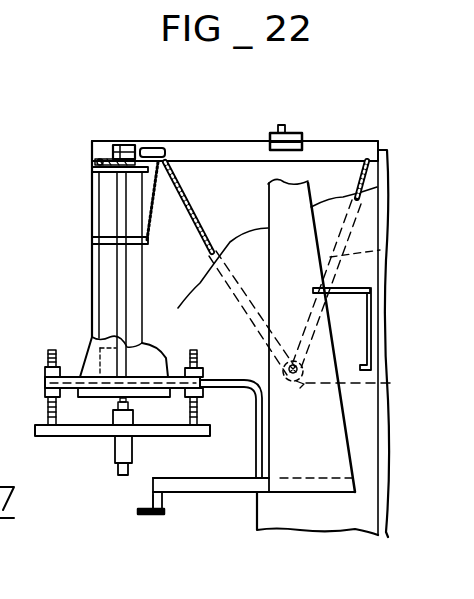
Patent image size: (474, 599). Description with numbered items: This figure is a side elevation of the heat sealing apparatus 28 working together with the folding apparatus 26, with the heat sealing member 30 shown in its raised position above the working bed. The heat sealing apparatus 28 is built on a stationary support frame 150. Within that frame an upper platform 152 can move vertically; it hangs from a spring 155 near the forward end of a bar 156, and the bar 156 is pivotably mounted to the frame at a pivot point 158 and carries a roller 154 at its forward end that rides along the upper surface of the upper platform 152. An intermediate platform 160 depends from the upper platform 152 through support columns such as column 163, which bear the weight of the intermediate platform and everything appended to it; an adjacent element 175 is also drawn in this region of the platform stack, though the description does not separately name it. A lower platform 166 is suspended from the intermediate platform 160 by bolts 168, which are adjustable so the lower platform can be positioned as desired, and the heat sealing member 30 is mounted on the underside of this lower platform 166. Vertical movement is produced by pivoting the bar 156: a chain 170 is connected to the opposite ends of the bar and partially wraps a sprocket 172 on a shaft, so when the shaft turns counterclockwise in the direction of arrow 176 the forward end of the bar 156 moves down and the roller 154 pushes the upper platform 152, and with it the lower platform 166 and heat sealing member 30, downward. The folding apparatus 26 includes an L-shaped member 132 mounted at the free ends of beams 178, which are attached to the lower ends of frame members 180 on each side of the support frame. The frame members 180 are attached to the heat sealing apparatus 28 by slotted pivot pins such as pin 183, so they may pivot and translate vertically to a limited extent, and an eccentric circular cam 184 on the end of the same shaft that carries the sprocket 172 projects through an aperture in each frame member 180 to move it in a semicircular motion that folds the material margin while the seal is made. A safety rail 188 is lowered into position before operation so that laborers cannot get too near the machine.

The folding apparatus 26 is at (160, 527).
The heat sealing apparatus 28 is at (65, 228).
The heat sealing member 30 is at (117, 477).
The L-shaped member 132 is at (162, 502).
The support frame 150 is at (205, 297).
The upper platform 152 is at (90, 180).
The roller 154 is at (100, 158).
The spring 155 is at (150, 203).
The bar 156 is at (208, 163).
The pivot point 158 is at (280, 161).
The intermediate platform 160 is at (122, 402).
The support column 163 is at (118, 311).
The lower platform 166 is at (157, 436).
The bolts 168 is at (50, 407).
The chain 170 is at (243, 302).
The sprocket 172 is at (300, 386).
The cylinder 175 is at (110, 265).
The arrow 176 is at (300, 318).
The beams 178 is at (245, 493).
The frame members 180 is at (326, 470).
The pivot pin 183 is at (284, 132).
The eccentric circular cam 184 is at (380, 382).
The safety rail 188 is at (350, 295).